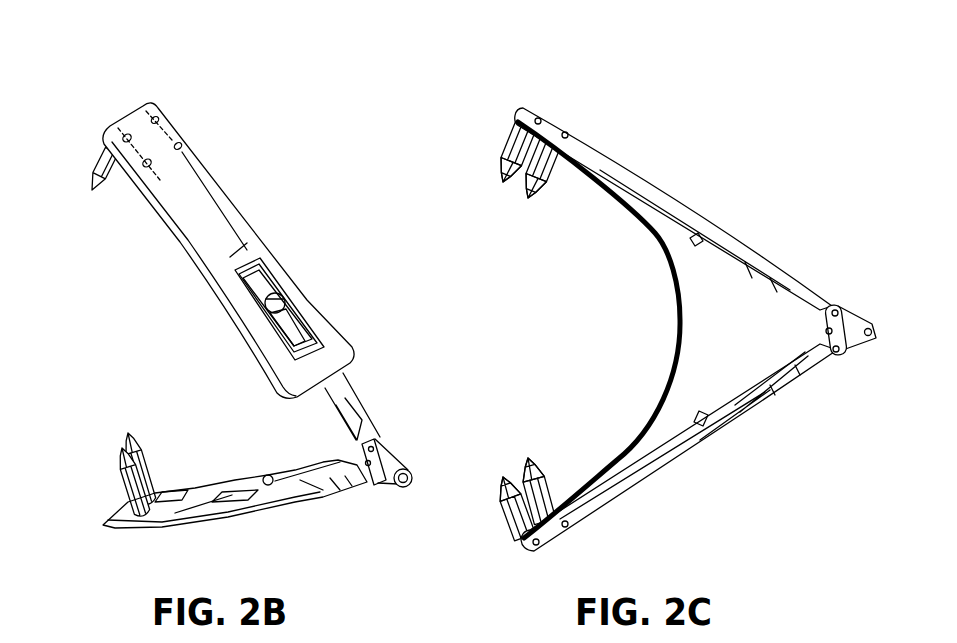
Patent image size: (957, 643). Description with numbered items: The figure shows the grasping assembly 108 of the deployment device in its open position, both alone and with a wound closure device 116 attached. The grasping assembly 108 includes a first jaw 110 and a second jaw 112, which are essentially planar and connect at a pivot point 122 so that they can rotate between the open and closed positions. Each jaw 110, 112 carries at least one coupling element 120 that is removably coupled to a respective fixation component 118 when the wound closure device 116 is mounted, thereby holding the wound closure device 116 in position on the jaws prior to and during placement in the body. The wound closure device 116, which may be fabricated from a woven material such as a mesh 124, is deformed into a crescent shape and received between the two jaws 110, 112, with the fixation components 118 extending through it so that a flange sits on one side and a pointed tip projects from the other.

In FIG. 2B, the grasping assembly 108 is at (139, 68).
In FIG. 2C, the grasping assembly 108 is at (566, 82).
In FIG. 2B, the first jaw 110 is at (245, 206).
In FIG. 2C, the first jaw 110 is at (731, 216).
In FIG. 2B, the second jaw 112 is at (226, 527).
In FIG. 2C, the second jaw 112 is at (698, 465).
In FIG. 2C, the wound closure device 116 is at (668, 310).
In FIG. 2C, the fixation component 118 is at (501, 140).
In FIG. 2B, the coupling element 120 is at (88, 187).
In FIG. 2C, the coupling element 120 is at (511, 203).
In FIG. 2B, the pivot point 122 is at (393, 445).
In FIG. 2C, the pivot point 122 is at (874, 336).
In FIG. 2C, the mesh 124 is at (655, 253).